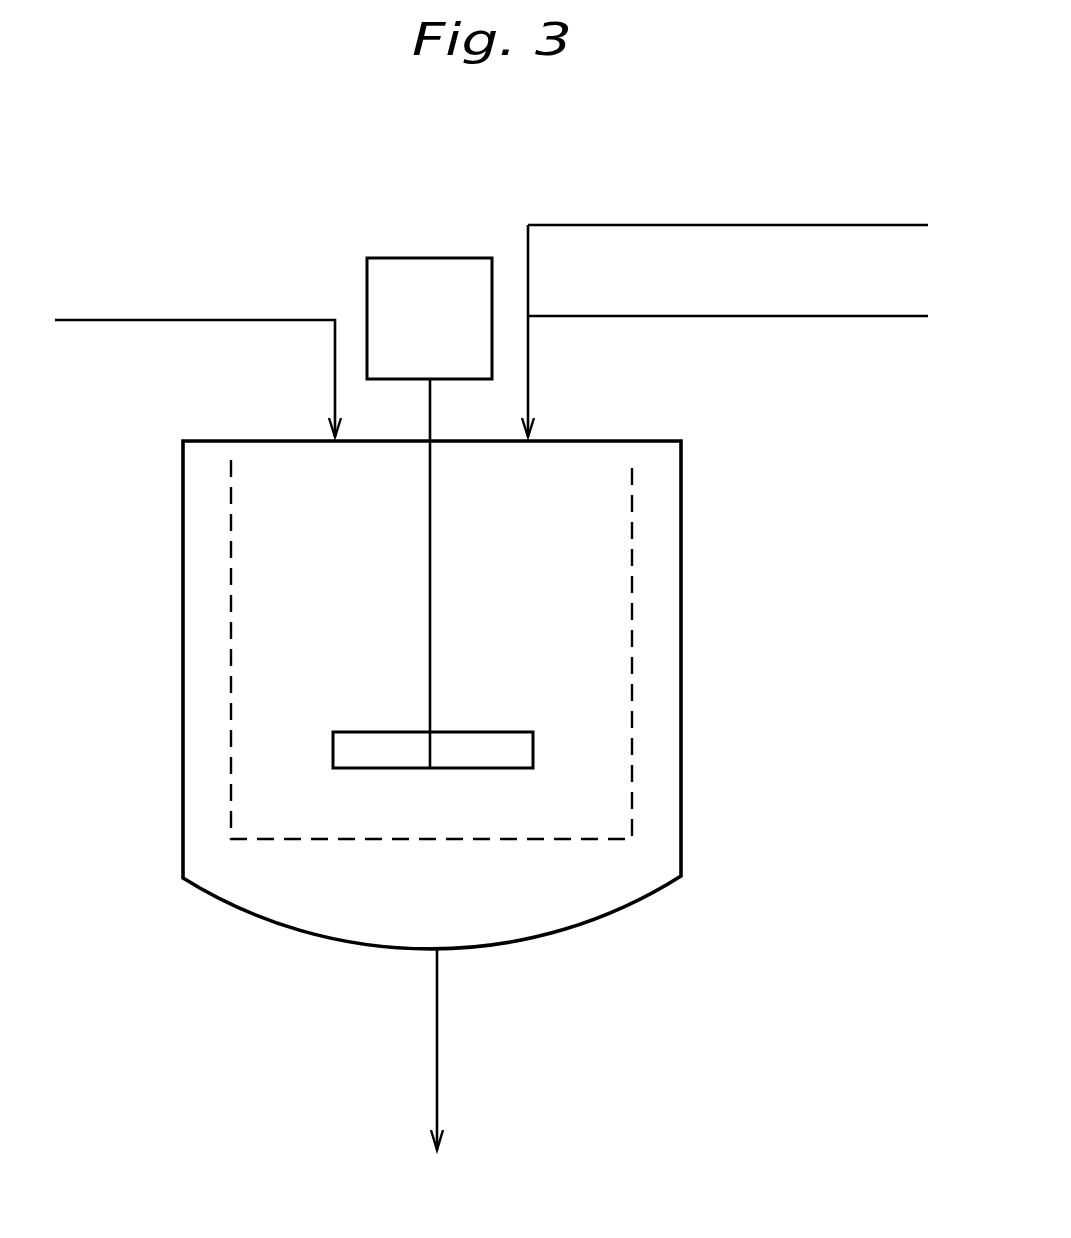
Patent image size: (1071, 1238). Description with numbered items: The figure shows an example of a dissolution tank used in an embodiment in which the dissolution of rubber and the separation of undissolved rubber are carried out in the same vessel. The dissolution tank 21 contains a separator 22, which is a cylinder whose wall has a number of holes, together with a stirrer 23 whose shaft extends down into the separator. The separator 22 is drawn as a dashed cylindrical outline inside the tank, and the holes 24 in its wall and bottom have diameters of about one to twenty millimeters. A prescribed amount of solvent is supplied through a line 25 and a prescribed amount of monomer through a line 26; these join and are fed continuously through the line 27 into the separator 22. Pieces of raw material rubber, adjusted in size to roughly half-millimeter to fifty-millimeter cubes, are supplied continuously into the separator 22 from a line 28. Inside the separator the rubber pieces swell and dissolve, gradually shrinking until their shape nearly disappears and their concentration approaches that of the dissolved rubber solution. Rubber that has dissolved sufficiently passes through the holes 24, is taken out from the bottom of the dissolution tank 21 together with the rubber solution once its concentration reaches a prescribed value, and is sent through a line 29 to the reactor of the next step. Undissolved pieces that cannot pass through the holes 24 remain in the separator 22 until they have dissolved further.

The dissolution tank 21 is at (183, 489).
The separator 22 is at (231, 718).
The stirrer 23 is at (333, 750).
The holes 24 is at (632, 565).
The line 25 is at (829, 316).
The line 26 is at (698, 225).
The line 27 is at (528, 357).
The line 28 is at (142, 320).
The line 29 is at (437, 1043).